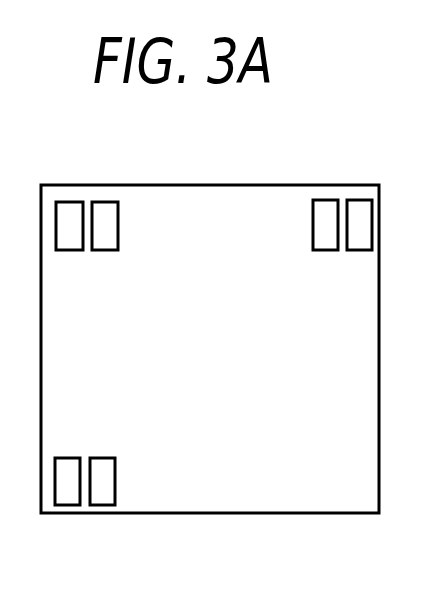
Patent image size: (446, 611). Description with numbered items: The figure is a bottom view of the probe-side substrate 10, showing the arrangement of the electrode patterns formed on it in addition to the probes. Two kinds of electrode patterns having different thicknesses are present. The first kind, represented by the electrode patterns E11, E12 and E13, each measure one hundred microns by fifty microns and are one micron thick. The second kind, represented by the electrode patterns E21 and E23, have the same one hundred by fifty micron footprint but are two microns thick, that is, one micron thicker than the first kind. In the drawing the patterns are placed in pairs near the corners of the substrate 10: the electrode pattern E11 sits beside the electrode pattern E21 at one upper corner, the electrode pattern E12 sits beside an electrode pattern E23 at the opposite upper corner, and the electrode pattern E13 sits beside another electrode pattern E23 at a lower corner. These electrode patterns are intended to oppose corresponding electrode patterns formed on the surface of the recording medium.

The probe-side substrate 10 is at (323, 505).
The electrode pattern E1i E11 is at (70, 208).
The electrode pattern E2i E21 is at (105, 208).
The electrode pattern E1i E12 is at (325, 204).
The electrode pattern E2i E23 is at (358, 206).
The electrode pattern E1i E13 is at (68, 503).